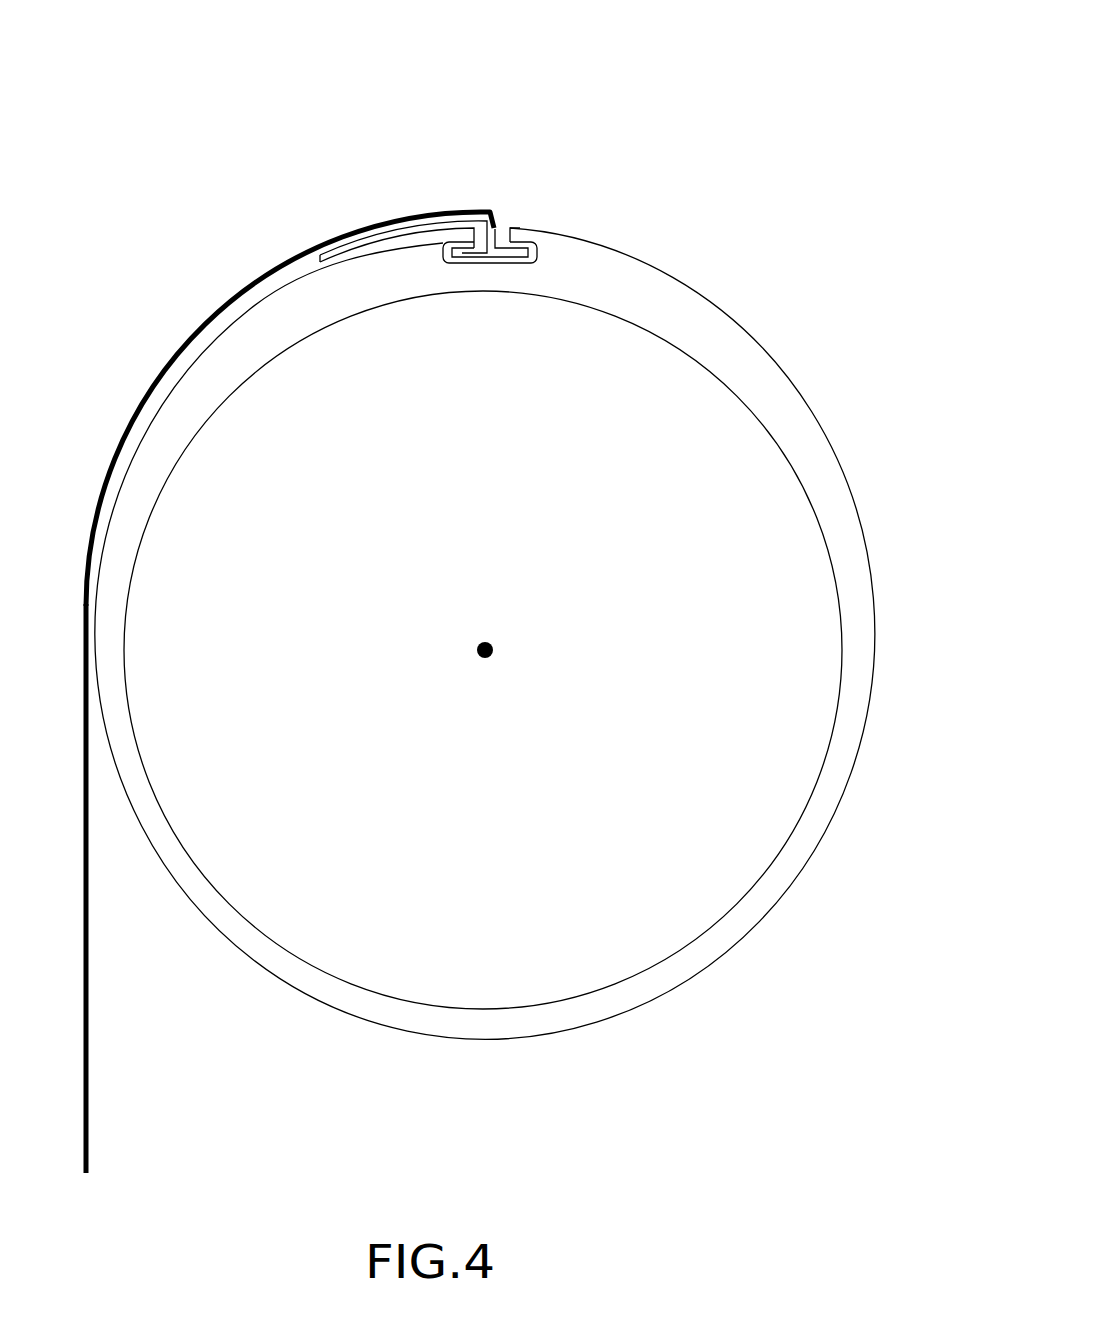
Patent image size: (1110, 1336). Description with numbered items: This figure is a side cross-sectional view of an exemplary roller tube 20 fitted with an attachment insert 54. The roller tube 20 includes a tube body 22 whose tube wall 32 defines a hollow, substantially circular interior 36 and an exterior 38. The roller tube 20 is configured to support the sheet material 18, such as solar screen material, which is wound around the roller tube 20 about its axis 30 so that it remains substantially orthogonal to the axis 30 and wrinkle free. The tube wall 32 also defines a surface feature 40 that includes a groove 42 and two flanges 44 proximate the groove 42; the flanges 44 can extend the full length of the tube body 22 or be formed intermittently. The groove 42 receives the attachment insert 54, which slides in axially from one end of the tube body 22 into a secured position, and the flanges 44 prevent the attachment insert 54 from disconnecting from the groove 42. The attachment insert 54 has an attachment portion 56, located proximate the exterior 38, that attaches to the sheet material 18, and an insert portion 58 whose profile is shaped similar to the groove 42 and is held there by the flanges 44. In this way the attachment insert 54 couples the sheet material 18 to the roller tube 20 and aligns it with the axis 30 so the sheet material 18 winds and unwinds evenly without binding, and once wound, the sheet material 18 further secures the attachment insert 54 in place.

The sheet material 18 is at (87, 995).
The roller tube 20 is at (491, 78).
The tube body 22 is at (832, 795).
The axis 30 is at (483, 638).
The tube wall 32 is at (840, 468).
The interior 36 is at (707, 740).
The exterior 38 is at (957, 668).
The surface feature 40 is at (441, 178).
The groove 42 is at (511, 190).
The flange 44 is at (515, 232).
The attachment insert 54 is at (365, 220).
The attachment portion 56 is at (318, 258).
The insert portion 58 is at (497, 263).